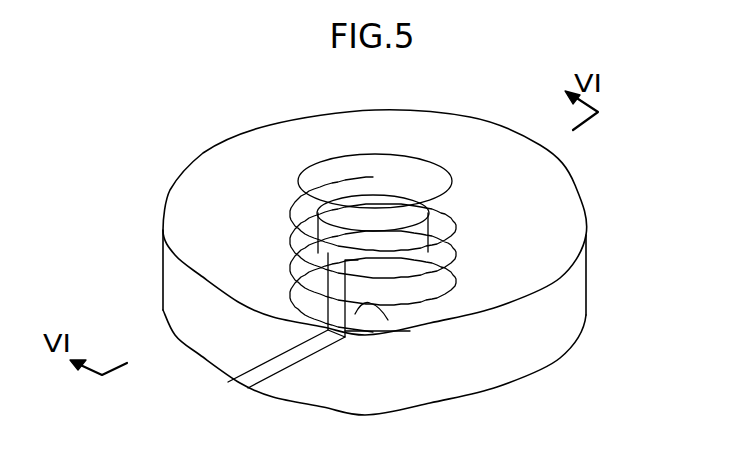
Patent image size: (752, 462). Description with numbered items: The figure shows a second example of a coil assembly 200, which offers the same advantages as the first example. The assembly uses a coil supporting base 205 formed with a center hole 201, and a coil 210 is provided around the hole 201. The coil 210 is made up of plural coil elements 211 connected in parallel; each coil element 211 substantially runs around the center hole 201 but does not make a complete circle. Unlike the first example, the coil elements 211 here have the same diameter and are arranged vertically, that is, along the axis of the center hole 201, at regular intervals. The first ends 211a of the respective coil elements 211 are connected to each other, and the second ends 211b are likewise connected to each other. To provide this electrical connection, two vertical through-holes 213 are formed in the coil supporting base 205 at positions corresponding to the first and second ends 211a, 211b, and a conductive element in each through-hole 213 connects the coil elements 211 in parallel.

The coil assembly 200 is at (594, 190).
The center hole 201 is at (390, 213).
The coil supporting base 205 is at (563, 324).
The coil 210 is at (466, 195).
The coil elements 211 is at (290, 288).
The first ends 211a is at (293, 297).
The second ends 211b is at (388, 320).
The through-holes 213 is at (350, 297).